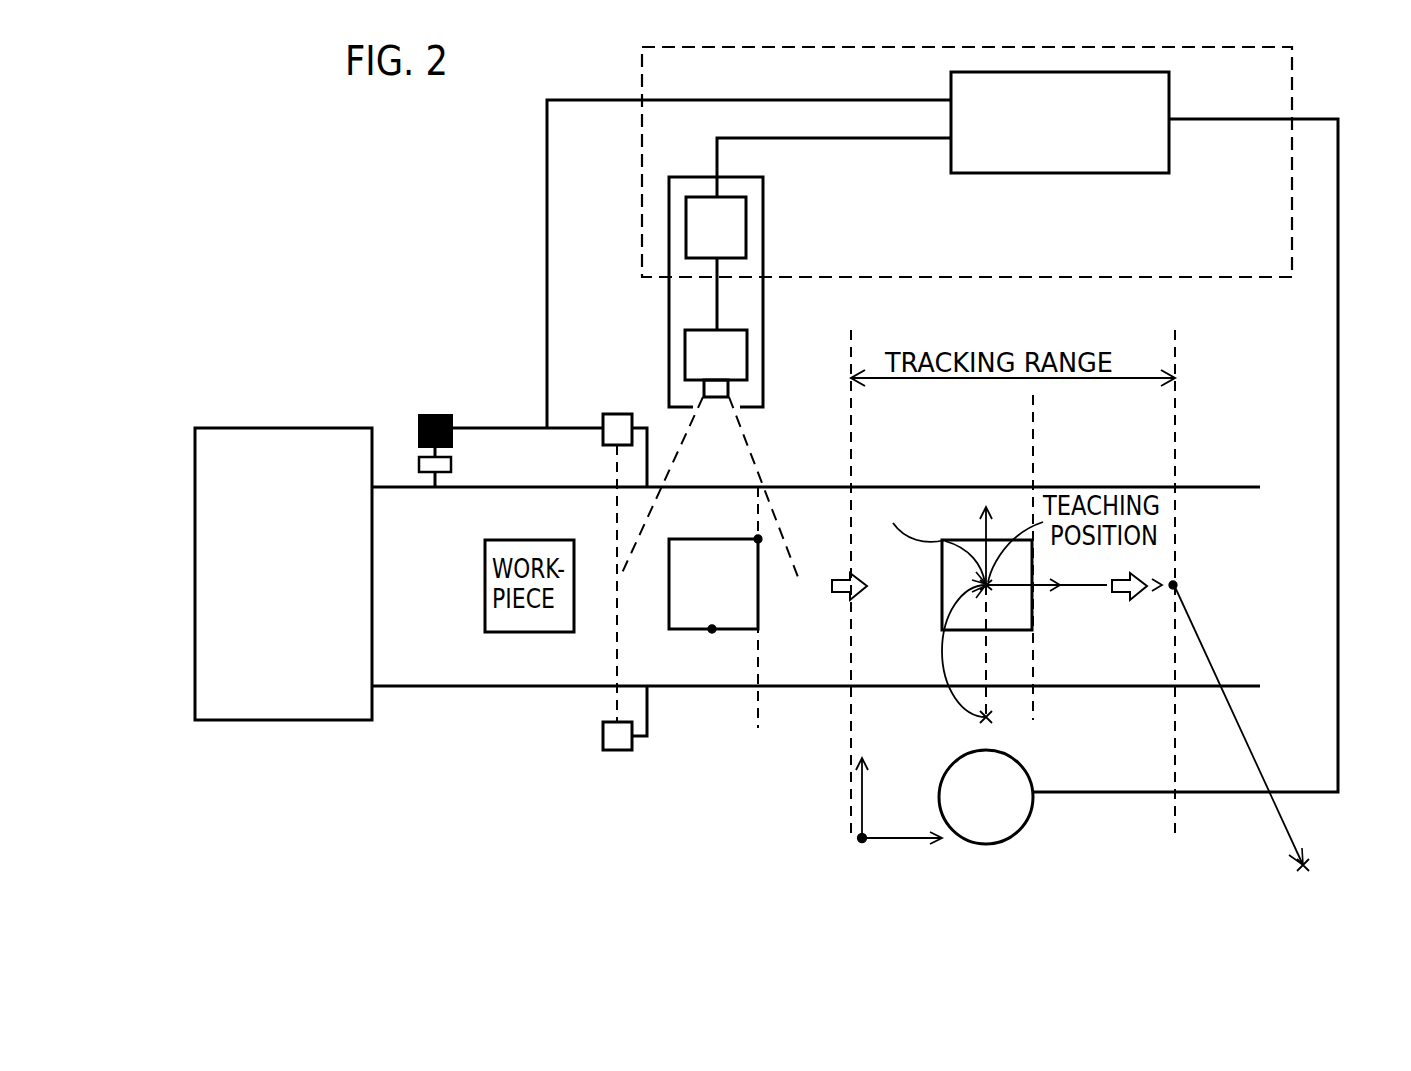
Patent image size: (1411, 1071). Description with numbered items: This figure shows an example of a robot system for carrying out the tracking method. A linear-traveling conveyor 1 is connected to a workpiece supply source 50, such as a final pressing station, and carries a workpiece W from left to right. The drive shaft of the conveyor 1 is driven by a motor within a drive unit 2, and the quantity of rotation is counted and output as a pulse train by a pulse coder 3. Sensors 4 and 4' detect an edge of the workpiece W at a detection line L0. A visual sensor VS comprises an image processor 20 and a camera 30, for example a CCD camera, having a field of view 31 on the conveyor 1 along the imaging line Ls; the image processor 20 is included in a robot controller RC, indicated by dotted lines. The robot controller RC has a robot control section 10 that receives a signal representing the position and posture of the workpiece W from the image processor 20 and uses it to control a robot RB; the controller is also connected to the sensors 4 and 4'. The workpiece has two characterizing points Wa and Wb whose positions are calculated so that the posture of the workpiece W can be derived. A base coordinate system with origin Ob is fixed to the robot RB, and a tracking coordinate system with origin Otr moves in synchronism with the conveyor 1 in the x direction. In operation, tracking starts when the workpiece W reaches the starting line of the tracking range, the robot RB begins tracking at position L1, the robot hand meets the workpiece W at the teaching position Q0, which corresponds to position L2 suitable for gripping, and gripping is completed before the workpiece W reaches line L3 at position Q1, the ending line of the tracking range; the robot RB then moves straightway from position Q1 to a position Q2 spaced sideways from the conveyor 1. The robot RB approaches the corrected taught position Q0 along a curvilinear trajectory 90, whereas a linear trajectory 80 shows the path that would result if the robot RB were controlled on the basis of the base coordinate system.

The conveyor 1 is at (428, 688).
The drive unit 2 is at (451, 465).
The pulse coder 3 is at (452, 420).
The sensor 4 is at (604, 402).
The sensor 4' is at (590, 759).
The robot control section 10 is at (1169, 88).
The image processor 20 is at (746, 232).
The camera 30 is at (747, 352).
The field of view 31 is at (757, 462).
The workpiece supply source 50 is at (315, 428).
The linear trajectory 80 is at (988, 658).
The curvilinear trajectory 90 is at (943, 665).
The robot controller RC is at (1292, 72).
The visual sensor VS is at (764, 207).
The robot RB is at (1030, 812).
The workpiece W is at (760, 616).
The characterizing point Wa is at (757, 538).
The characterizing point Wb is at (710, 630).
The detection line L0 is at (614, 644).
The camera imaging line Ls is at (758, 707).
The position L1 is at (851, 447).
The position L2 is at (1033, 452).
The line L3 is at (1175, 435).
The teaching position Q0 is at (1043, 556).
The position Q1 is at (1192, 586).
The position Q2 is at (1260, 740).
The base coordinate system origin Ob is at (893, 804).
The tracking coordinate system origin Otr is at (919, 539).